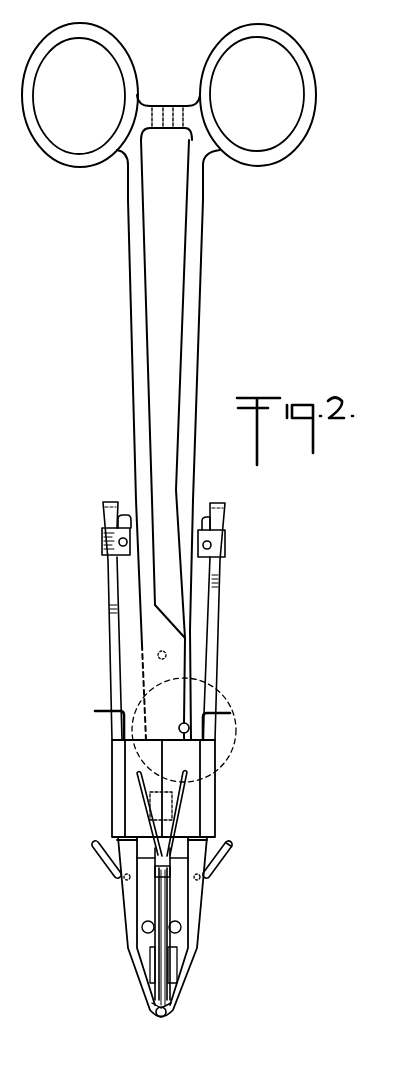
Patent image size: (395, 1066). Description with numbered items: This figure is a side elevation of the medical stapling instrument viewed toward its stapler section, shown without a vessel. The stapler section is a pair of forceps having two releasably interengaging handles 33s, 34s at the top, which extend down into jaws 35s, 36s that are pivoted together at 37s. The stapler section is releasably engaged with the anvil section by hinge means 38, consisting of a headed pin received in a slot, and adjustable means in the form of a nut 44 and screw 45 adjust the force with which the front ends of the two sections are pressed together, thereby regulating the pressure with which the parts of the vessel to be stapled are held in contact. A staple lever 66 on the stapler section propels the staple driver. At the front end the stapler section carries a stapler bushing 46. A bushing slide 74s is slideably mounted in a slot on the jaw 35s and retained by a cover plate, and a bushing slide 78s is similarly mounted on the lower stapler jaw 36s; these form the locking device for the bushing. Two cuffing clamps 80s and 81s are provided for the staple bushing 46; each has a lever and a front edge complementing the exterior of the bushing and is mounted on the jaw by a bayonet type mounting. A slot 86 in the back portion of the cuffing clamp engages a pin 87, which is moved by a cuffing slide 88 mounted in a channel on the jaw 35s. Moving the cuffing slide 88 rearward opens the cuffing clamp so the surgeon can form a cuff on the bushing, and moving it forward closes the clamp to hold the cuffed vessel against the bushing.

The handle 33s is at (233, 33).
The handle 34s is at (124, 47).
The jaw 35s is at (176, 975).
The jaw 36s is at (140, 975).
The pivot 37s is at (167, 656).
The hinge means 38 is at (175, 811).
The nut 44 is at (219, 703).
The screw 45 is at (184, 760).
The stapler bushing 46 is at (163, 1018).
The staple lever 66 is at (156, 898).
The bushing slide 74s is at (233, 728).
The bushing slide 78s is at (112, 727).
The cuffing clamp 80s is at (233, 853).
The cuffing clamp 81s is at (100, 858).
The slot 86 is at (229, 841).
The pin 87 is at (201, 877).
The cuffing slide 88 is at (224, 513).